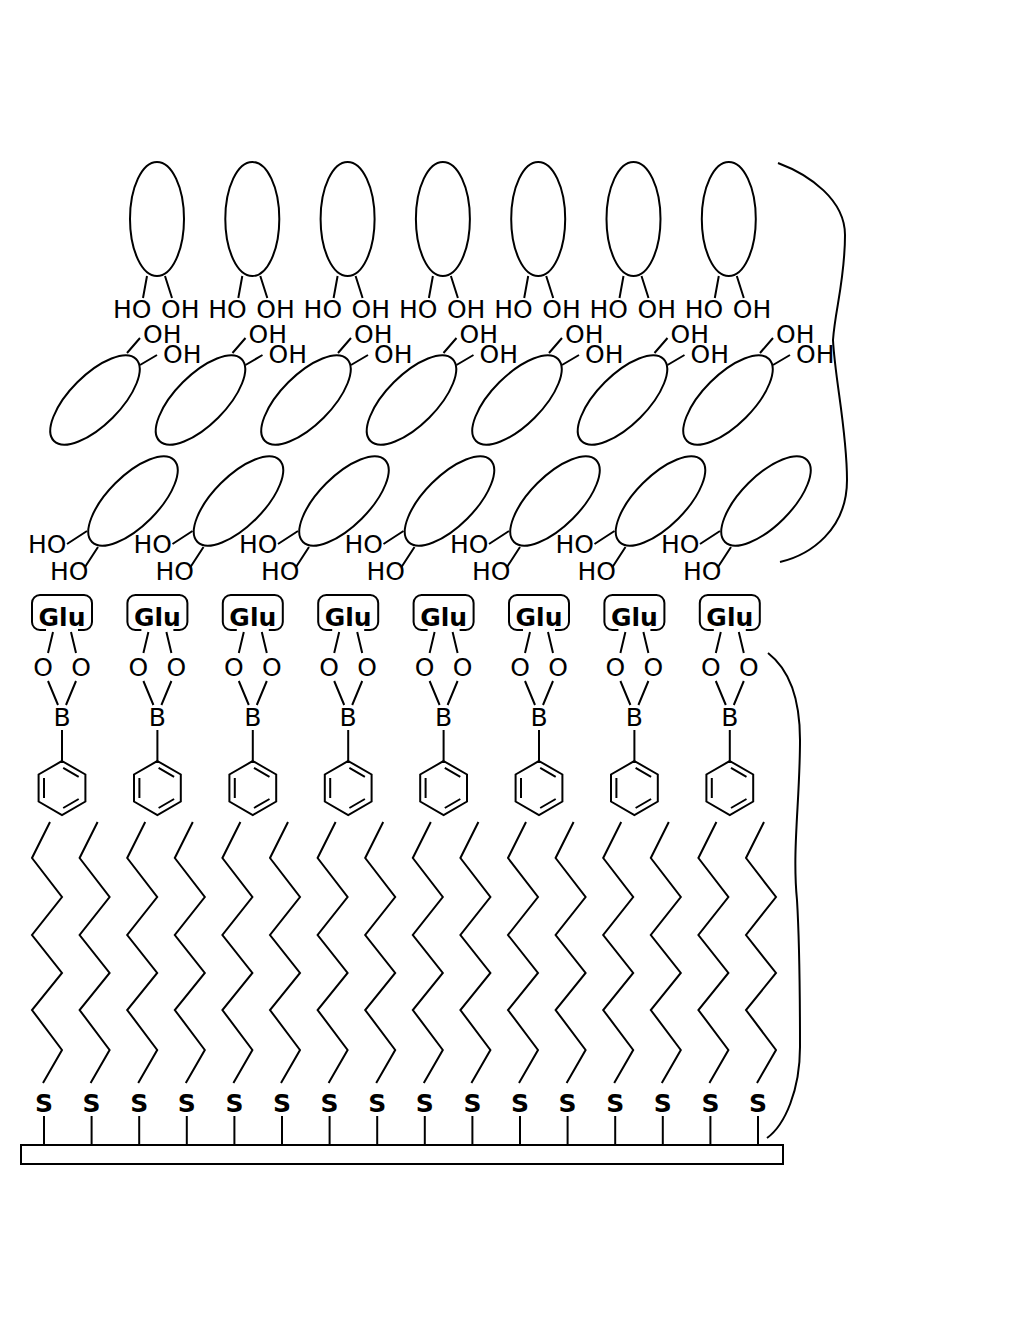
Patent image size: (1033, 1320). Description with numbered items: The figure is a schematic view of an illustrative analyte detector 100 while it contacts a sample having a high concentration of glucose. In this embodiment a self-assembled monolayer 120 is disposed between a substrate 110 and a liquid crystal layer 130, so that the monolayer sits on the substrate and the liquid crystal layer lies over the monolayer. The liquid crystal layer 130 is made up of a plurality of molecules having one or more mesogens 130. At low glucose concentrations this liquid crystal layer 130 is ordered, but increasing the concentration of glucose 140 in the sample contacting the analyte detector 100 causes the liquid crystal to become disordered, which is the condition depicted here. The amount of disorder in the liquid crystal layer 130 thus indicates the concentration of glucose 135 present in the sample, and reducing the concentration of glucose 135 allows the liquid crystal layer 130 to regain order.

The analyte detector 100 is at (612, 70).
The substrate 110 is at (783, 1156).
The self-assembled monolayer 120 is at (441, 888).
The liquid crystal layer 130 is at (451, 348).
The glucose 135 is at (136, 170).
The glucose 140 is at (766, 602).